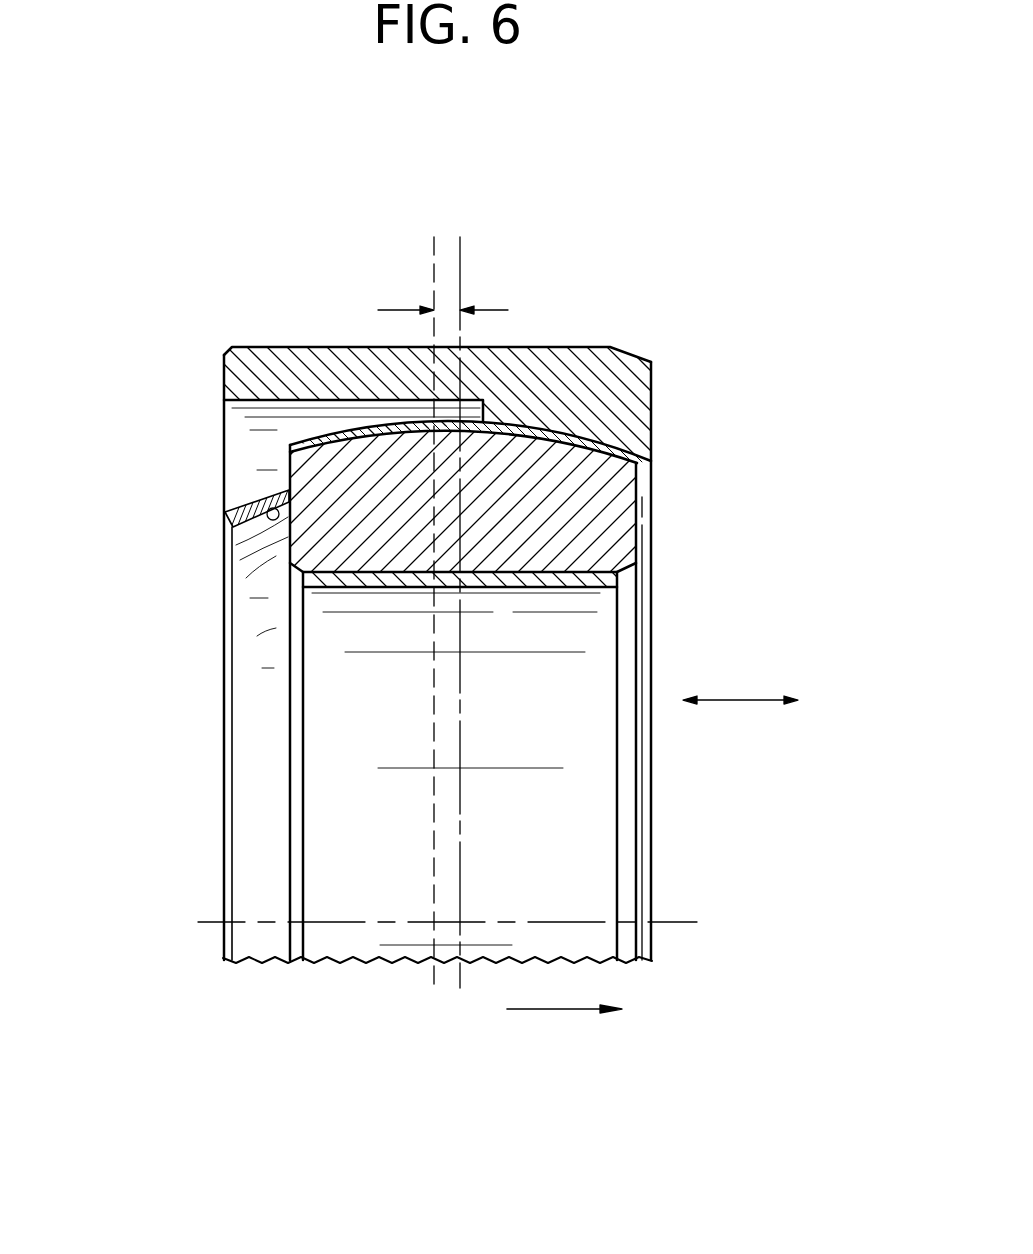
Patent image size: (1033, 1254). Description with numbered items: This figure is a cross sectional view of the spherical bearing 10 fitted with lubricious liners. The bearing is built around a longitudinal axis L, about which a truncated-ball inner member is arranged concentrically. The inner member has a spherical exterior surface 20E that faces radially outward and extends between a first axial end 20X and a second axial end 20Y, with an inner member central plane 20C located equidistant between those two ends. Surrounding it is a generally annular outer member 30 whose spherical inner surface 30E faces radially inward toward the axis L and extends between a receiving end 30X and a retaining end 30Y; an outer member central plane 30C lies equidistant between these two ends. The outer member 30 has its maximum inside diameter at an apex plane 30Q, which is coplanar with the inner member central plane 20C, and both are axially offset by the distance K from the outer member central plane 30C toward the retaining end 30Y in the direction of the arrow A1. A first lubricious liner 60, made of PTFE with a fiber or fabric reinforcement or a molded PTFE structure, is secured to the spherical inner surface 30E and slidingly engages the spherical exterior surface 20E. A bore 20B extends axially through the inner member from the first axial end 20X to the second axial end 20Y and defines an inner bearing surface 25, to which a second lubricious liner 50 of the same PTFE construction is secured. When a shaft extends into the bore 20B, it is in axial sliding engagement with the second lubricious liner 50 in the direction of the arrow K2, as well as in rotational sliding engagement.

The spherical bearing 10 is at (640, 156).
The outer member 30 is at (615, 373).
The receiving end 30X is at (224, 372).
The retaining end 30Y is at (652, 399).
The spherical inner surface 30E is at (274, 510).
The outer member central plane 30C is at (434, 260).
The apex plane 30Q is at (460, 268).
The first lubricious liner 60 is at (232, 518).
The spherical exterior surface 20E is at (312, 440).
The first axial end 20X is at (300, 532).
The second axial end 20Y is at (637, 526).
The bore 20B is at (372, 718).
The inner member central plane 20C is at (556, 608).
The inner bearing surface 25 is at (375, 588).
The second lubricious liner 50 is at (603, 590).
The axial offset K is at (455, 311).
The arrow K2 is at (735, 700).
The longitudinal axis L is at (677, 922).
The arrow A1 is at (558, 1011).